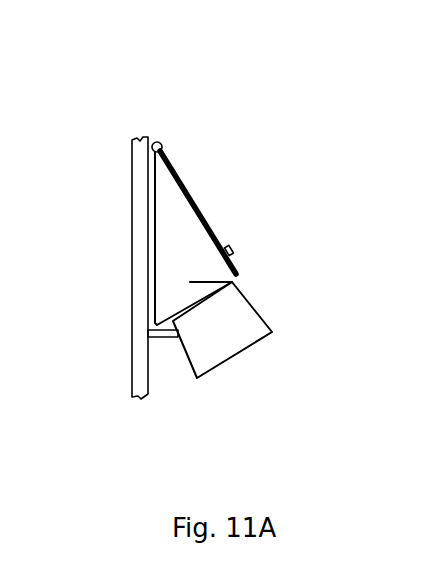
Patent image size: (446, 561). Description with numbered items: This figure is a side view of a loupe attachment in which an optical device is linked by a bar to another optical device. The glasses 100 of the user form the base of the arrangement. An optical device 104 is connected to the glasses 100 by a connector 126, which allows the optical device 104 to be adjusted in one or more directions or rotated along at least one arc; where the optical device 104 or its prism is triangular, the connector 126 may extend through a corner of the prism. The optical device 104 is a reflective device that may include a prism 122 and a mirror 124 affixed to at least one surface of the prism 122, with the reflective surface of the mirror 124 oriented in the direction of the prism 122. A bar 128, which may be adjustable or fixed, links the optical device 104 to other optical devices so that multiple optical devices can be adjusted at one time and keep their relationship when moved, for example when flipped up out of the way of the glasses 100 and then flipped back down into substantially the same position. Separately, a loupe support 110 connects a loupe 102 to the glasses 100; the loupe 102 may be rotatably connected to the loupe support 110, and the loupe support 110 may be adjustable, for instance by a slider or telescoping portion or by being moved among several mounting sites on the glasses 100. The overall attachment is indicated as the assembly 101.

The glasses 100 is at (132, 158).
The mounting assembly 101 is at (168, 120).
The loupe 102 is at (240, 327).
The optical device 104 is at (192, 183).
The loupe support 110 is at (167, 337).
The prism 122 is at (235, 281).
The mirror 124 is at (205, 215).
The connector 126 is at (155, 142).
The bar 128 is at (237, 251).